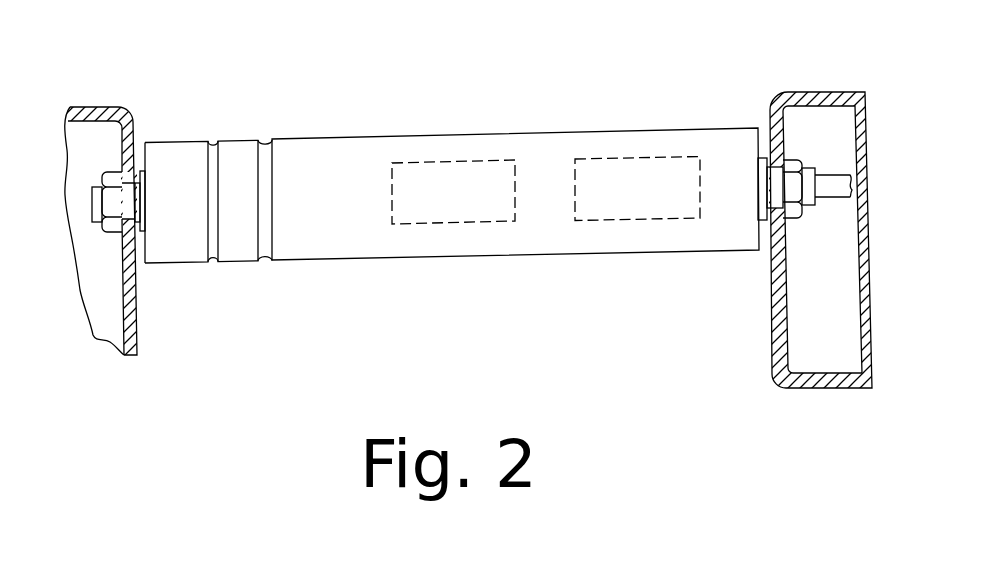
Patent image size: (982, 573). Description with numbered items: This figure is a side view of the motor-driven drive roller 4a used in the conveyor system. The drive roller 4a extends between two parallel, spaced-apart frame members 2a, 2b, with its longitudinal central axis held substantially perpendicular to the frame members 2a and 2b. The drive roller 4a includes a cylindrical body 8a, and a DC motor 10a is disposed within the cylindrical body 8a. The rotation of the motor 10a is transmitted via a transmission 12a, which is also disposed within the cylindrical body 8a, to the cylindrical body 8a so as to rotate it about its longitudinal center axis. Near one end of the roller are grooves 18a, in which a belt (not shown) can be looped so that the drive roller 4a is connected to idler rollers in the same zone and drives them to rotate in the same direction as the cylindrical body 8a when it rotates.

The frame member 2a is at (93, 130).
The frame member 2b is at (803, 112).
The drive roller 4a is at (548, 115).
The cylindrical body 8a is at (345, 148).
The grooves 18a is at (267, 140).
The transmission 12a is at (443, 195).
The DC motor 10a is at (618, 193).